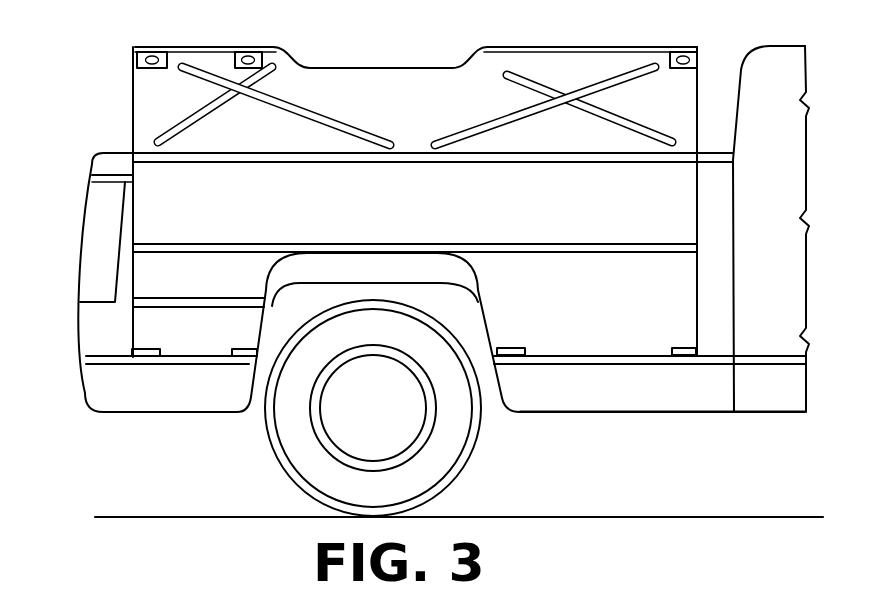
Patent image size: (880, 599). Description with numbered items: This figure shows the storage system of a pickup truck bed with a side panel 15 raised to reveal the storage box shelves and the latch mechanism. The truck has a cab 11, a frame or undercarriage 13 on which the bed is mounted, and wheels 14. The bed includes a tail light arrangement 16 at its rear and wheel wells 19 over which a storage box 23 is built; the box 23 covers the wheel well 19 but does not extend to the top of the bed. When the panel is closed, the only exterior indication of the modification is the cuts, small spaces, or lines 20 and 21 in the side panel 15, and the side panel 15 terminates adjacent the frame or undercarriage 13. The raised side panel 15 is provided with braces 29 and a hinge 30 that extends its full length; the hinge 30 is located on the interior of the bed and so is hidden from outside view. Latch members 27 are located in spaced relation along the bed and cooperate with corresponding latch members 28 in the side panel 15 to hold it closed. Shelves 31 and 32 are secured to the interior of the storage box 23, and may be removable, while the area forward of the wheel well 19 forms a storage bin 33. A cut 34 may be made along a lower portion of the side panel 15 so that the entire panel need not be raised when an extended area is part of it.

The cab 11 is at (743, 63).
The frame or undercarriage 13 is at (207, 402).
The wheels 14 is at (293, 450).
The side panels 15 is at (438, 113).
The tail light arrangement 16 is at (100, 210).
The wheel wells 19 is at (373, 268).
The cut or line in side panel 20 is at (697, 211).
The cut or line in side panel 21 is at (135, 222).
The storage box 23 is at (600, 205).
The latch members 27 is at (240, 349).
The latch members 28 is at (163, 52).
The braces 29 is at (300, 105).
The hinge 30 is at (405, 164).
The shelf 31 is at (203, 298).
The shelf 32 is at (500, 244).
The storage bin 33 is at (568, 393).
The cut 34 is at (175, 350).